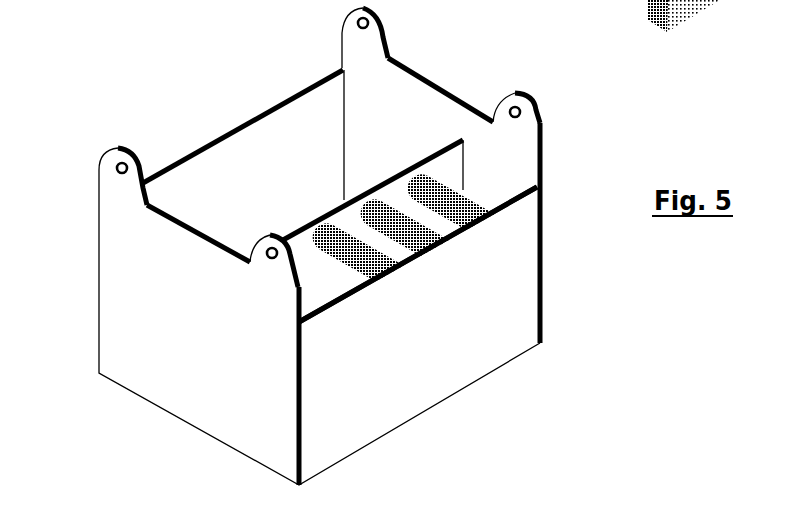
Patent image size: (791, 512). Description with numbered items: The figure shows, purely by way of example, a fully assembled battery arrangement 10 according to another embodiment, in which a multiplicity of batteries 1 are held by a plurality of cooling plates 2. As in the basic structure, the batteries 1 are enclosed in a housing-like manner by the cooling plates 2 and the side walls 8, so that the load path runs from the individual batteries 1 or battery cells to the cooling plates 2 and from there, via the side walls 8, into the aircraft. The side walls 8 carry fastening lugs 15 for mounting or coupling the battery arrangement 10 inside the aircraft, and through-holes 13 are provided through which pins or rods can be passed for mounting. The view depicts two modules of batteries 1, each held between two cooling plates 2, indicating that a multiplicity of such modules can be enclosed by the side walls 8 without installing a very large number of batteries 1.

The battery 1 is at (319, 242).
The cooling plate 2 is at (248, 117).
The side wall 8 is at (291, 143).
The battery arrangement 10 is at (319, 242).
The through-hole 13 is at (355, 25).
The lug 15 is at (105, 165).